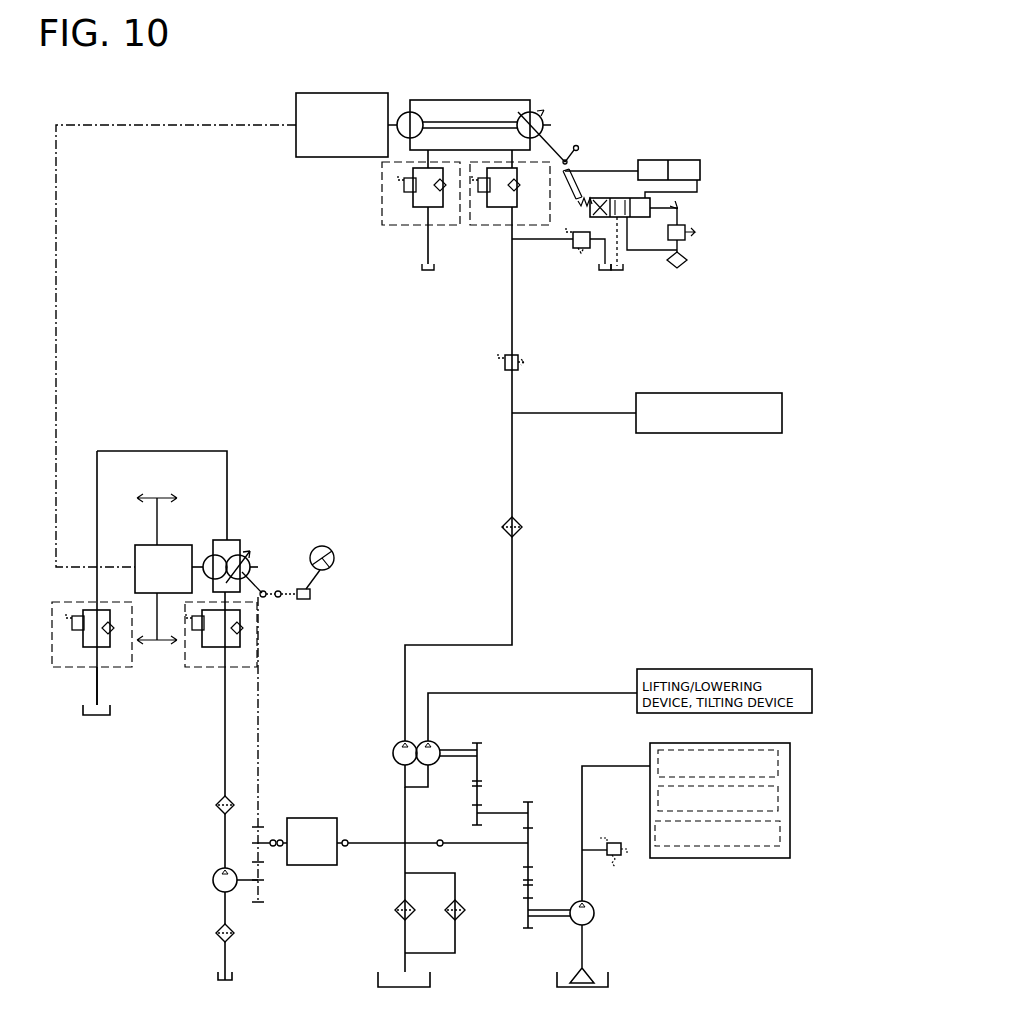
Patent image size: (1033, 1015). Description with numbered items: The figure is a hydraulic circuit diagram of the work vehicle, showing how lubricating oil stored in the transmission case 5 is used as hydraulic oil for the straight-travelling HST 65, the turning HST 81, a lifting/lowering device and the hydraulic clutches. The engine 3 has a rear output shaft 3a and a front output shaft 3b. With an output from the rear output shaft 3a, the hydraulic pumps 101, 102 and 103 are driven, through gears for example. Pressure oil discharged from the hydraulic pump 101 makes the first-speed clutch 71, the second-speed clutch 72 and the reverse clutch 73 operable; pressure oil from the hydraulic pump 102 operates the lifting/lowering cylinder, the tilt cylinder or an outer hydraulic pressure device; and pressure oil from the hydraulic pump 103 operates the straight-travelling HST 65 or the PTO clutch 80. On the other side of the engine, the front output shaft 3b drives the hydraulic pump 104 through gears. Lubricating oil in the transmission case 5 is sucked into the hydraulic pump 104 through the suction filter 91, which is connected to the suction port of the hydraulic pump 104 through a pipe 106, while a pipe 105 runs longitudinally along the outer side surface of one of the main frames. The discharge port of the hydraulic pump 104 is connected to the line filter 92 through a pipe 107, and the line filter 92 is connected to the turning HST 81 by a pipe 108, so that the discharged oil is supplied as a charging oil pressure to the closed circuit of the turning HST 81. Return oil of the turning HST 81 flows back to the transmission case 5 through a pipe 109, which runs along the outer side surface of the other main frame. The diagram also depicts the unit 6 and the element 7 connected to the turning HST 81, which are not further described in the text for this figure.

The engine 3 is at (313, 818).
The rear output shaft 3a is at (345, 838).
The front output shaft 3b is at (277, 838).
The transmission case 5 is at (342, 158).
The hydrostatic transmission 6 is at (135, 556).
The steering wheel 7 is at (305, 588).
The straight-travelling HST 65 is at (553, 112).
The first-speed clutch 71 is at (790, 759).
The second-speed clutch 72 is at (790, 805).
The reverse clutch 73 is at (790, 835).
The PTO clutch 80 is at (700, 393).
The turning HST 81 is at (250, 547).
The suction filter 91 is at (215, 931).
The line filter 92 is at (216, 802).
The hydraulic pump 101 is at (596, 913).
The hydraulic pump 102 is at (432, 742).
The hydraulic pump 103 is at (398, 742).
The hydraulic pump 104 is at (213, 880).
The pipe 105 is at (227, 958).
The pipe 106 is at (226, 905).
The pipe 107 is at (224, 838).
The pipe 108 is at (224, 705).
The pipe 109 is at (95, 690).